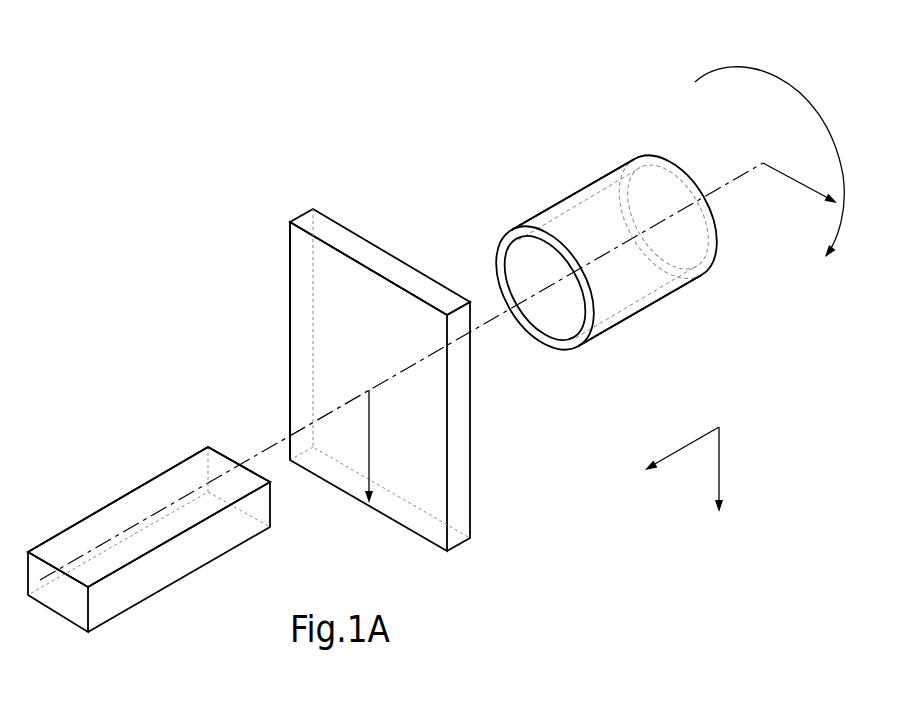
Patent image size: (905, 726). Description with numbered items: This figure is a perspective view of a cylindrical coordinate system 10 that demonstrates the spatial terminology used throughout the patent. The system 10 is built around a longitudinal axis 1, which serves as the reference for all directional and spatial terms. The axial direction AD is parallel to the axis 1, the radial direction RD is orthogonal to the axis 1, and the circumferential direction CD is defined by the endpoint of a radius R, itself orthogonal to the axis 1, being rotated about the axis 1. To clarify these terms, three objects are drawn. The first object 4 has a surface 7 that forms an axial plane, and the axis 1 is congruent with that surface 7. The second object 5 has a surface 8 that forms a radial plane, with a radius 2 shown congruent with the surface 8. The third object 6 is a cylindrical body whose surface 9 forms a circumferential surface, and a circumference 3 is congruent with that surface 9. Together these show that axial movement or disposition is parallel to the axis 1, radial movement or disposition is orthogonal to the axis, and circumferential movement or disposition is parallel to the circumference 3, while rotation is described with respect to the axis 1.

The longitudinal axis 1 is at (701, 203).
The radius 2 is at (370, 442).
The circumference 3 is at (497, 250).
The object 4 is at (119, 626).
The object 5 is at (488, 544).
The object 6 is at (636, 325).
The surface 7 is at (108, 522).
The surface 8 is at (303, 340).
The surface 9 is at (575, 192).
The cylindrical coordinate system 10 is at (240, 254).
The circumferential direction CD is at (770, 70).
The radius R is at (803, 187).
The axial direction AD is at (682, 445).
The radial direction RD is at (719, 463).